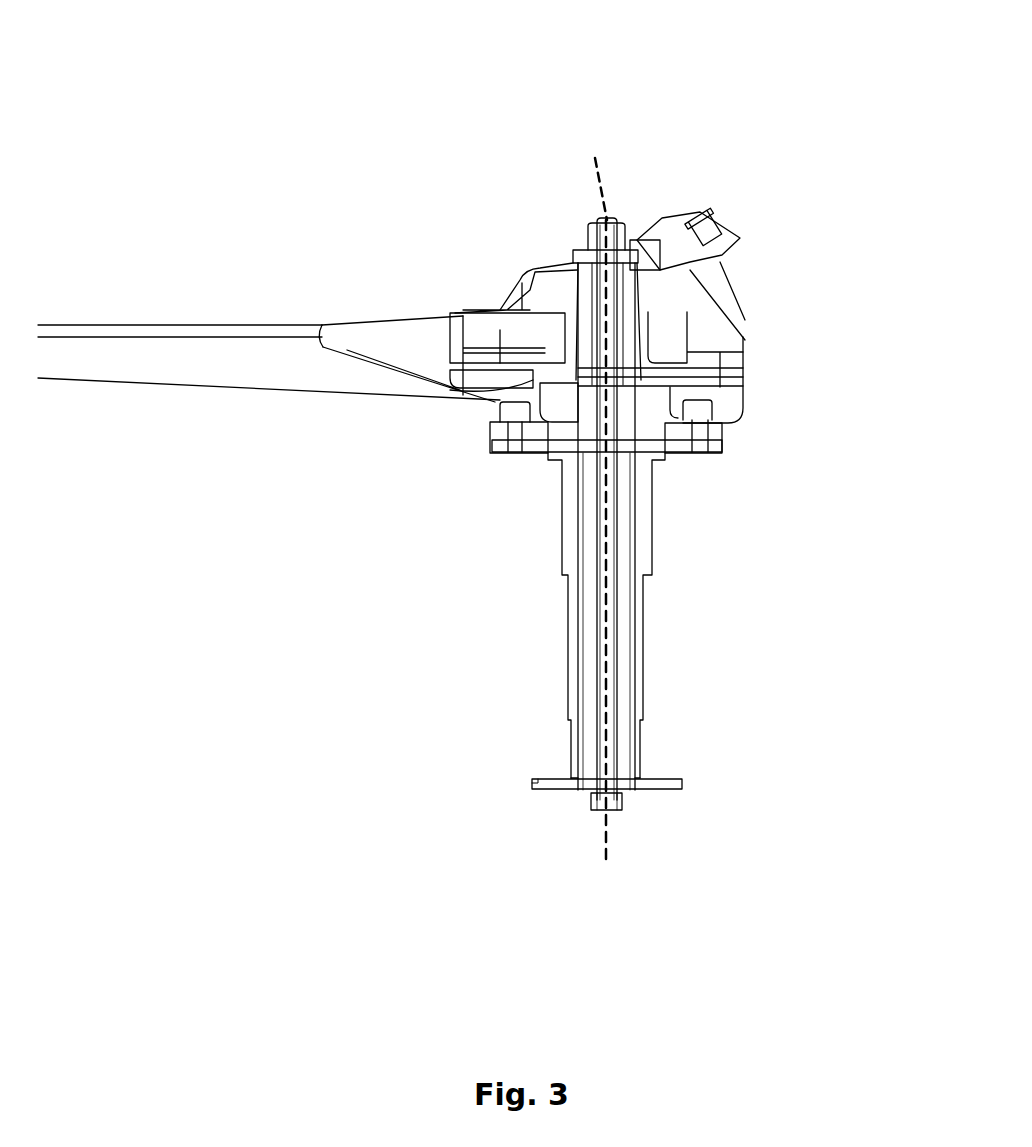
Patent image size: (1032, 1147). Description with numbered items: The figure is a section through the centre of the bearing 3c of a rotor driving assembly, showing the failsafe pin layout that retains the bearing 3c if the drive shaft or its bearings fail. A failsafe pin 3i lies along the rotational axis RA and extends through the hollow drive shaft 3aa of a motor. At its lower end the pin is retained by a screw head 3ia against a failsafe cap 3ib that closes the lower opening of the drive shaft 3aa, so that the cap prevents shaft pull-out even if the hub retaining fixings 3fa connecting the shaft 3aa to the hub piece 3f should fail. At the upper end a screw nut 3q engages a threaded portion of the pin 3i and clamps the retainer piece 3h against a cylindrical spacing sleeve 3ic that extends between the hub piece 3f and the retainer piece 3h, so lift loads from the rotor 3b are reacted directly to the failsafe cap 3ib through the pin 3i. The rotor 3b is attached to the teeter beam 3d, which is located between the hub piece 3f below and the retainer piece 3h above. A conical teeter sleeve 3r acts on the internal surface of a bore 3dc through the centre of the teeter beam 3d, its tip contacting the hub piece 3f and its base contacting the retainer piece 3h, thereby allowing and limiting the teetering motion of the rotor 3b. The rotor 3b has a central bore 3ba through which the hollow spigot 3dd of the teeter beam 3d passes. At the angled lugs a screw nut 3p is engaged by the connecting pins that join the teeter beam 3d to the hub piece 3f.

The rotational axis RA is at (592, 495).
The failsafe pin 3i is at (597, 647).
The retainer piece 3h is at (570, 240).
The screw nut 3q is at (617, 220).
The teeter beam 3d is at (660, 312).
The hollow spigot 3dd is at (640, 348).
The cylindrical spacing sleeve 3ic is at (622, 372).
The teeter sleeve 3r is at (580, 297).
The bore 3dc is at (573, 343).
The rotor 3b is at (203, 300).
The central bore 3ba is at (562, 349).
The bearing 3c is at (497, 237).
The hub piece 3f is at (720, 315).
The screw nut 3p is at (713, 227).
The hub retaining fixings 3fa is at (513, 439).
The hollow drive shaft 3aa is at (562, 538).
The failsafe cap 3ib is at (557, 787).
The screw head 3ia is at (612, 803).